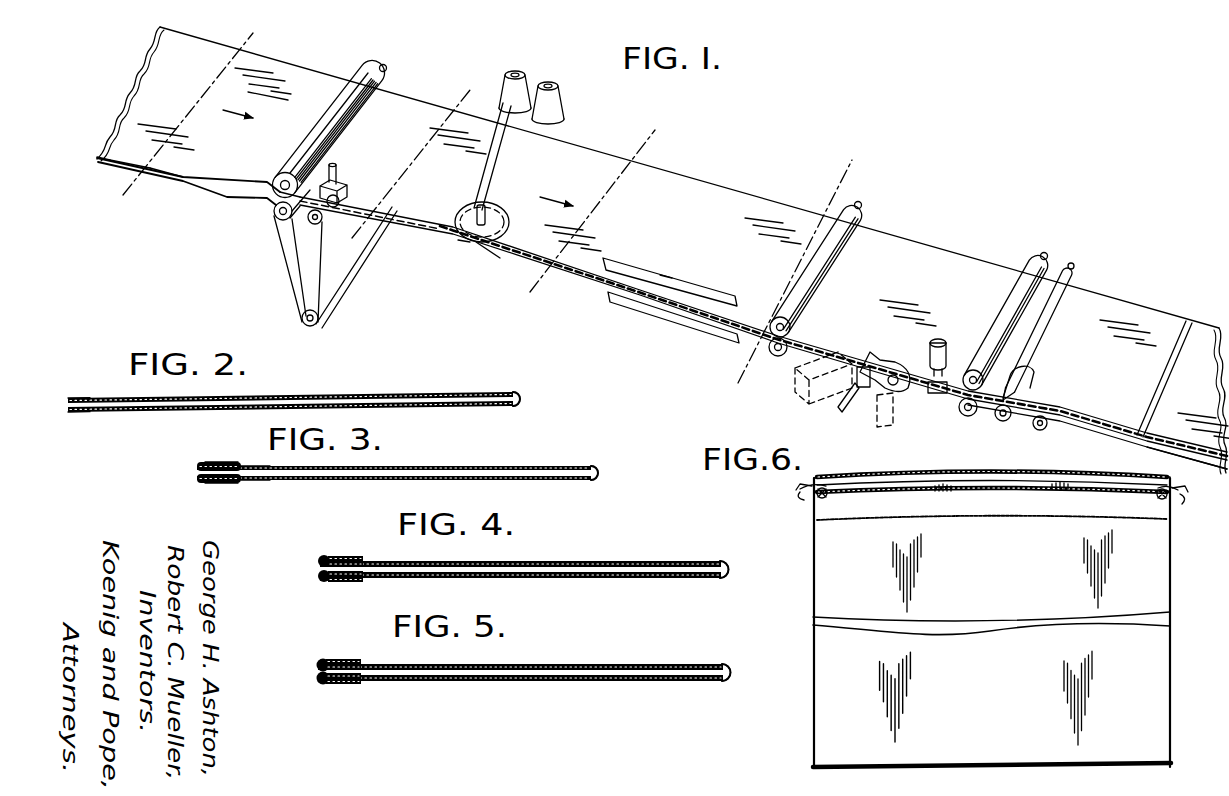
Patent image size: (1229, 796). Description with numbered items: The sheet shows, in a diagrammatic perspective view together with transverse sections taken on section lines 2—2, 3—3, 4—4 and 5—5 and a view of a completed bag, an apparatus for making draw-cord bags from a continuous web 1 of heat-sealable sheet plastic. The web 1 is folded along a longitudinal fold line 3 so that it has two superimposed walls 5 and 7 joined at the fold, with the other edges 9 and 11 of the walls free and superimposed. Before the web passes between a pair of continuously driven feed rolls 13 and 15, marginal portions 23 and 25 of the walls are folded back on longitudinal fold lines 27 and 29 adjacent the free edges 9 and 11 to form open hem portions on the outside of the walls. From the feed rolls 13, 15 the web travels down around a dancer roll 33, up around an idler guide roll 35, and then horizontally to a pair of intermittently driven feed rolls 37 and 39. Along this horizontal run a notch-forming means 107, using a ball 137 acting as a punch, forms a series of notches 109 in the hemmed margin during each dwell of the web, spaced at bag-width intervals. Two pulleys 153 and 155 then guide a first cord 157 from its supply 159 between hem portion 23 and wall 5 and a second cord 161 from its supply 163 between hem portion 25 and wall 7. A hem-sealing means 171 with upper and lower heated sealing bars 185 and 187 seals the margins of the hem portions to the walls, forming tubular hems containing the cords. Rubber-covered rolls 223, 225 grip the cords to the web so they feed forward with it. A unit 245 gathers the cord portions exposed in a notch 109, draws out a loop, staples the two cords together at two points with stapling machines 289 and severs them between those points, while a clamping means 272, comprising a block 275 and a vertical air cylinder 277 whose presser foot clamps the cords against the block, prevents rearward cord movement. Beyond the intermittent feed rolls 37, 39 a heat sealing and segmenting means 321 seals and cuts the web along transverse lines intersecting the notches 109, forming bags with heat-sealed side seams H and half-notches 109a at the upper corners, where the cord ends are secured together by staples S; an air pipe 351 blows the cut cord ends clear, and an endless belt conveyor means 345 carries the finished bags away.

In FIG. 1, the web 1 is at (148, 91).
In FIG. 2, the web 1 is at (122, 392).
In FIG. 3, the web 1 is at (488, 464).
In FIG. 4, the web 1 is at (626, 562).
In FIG. 5, the web 1 is at (634, 664).
In FIG. 1, the section line 2— 2 is at (231, 33).
In FIG. 1, the longitudinal fold line 3 is at (290, 56).
In FIG. 2, the longitudinal fold line 3 is at (521, 400).
In FIG. 3, the longitudinal fold line 3 is at (599, 474).
In FIG. 4, the longitudinal fold line 3 is at (729, 569).
In FIG. 5, the longitudinal fold line 3 is at (731, 673).
In FIG. 6, the longitudinal fold line 3 is at (1022, 760).
In FIG. 1, the section line 4— 4 is at (636, 135).
In FIG. 1, the wall 5 is at (208, 152).
In FIG. 2, the wall 5 is at (258, 396).
In FIG. 3, the wall 5 is at (410, 466).
In FIG. 4, the wall 5 is at (550, 562).
In FIG. 5, the wall 5 is at (562, 668).
In FIG. 6, the wall 5 is at (988, 478).
In FIG. 1, the wall 7 is at (190, 184).
In FIG. 2, the wall 7 is at (228, 412).
In FIG. 3, the wall 7 is at (410, 478).
In FIG. 4, the wall 7 is at (532, 578).
In FIG. 5, the wall 7 is at (552, 681).
In FIG. 6, the wall 7 is at (982, 585).
In FIG. 1, the free edge 9 is at (124, 167).
In FIG. 2, the free edge 9 is at (70, 396).
In FIG. 3, the free edge 9 is at (248, 465).
In FIG. 1, the free edge 11 is at (104, 161).
In FIG. 2, the free edge 11 is at (66, 414).
In FIG. 3, the free edge 11 is at (244, 481).
In FIG. 1, the feed roll 13 is at (273, 213).
In FIG. 1, the feed roll 15 is at (296, 172).
In FIG. 1, the marginal portion (open hem portion) 23 is at (243, 186).
In FIG. 3, the marginal portion (open hem portion) 23 is at (222, 462).
In FIG. 4, the marginal portion (open hem portion) 23 is at (346, 557).
In FIG. 5, the marginal portion (open hem portion) 23 is at (347, 660).
In FIG. 1, the marginal portion (open hem portion) 25 is at (328, 280).
In FIG. 3, the marginal portion (open hem portion) 25 is at (222, 483).
In FIG. 4, the marginal portion (open hem portion) 25 is at (350, 582).
In FIG. 5, the marginal portion (open hem portion) 25 is at (349, 684).
In FIG. 6, the marginal portion (open hem portion) 25 is at (1012, 512).
In FIG. 1, the longitudinal fold line 27 is at (448, 227).
In FIG. 3, the longitudinal fold line 27 is at (197, 467).
In FIG. 4, the longitudinal fold line 27 is at (317, 561).
In FIG. 5, the longitudinal fold line 27 is at (316, 664).
In FIG. 6, the longitudinal fold line 27 is at (950, 470).
In FIG. 1, the longitudinal fold line 29 is at (425, 243).
In FIG. 3, the longitudinal fold line 29 is at (197, 479).
In FIG. 4, the longitudinal fold line 29 is at (317, 577).
In FIG. 5, the longitudinal fold line 29 is at (316, 680).
In FIG. 6, the longitudinal fold line 29 is at (966, 493).
In FIG. 1, the dancer roll 33 is at (301, 318).
In FIG. 1, the idler guide roll 35 is at (322, 223).
In FIG. 1, the intermittent feed roll 37 is at (961, 413).
In FIG. 1, the intermittent feed roll 39 is at (992, 336).
In FIG. 1, the notch-forming means 107 is at (350, 184).
In FIG. 1, the notch 109 is at (476, 255).
In FIG. 6, the half-notch 109a is at (806, 500).
In FIG. 1, the ball 137 is at (340, 201).
In FIG. 1, the pulley 153 is at (503, 216).
In FIG. 1, the pulley 155 is at (470, 246).
In FIG. 1, the first cord 157 is at (480, 192).
In FIG. 4, the first cord 157 is at (328, 556).
In FIG. 5, the first cord 157 is at (328, 659).
In FIG. 6, the first cord 157 is at (818, 482).
In FIG. 1, the cord supply 159 is at (504, 80).
In FIG. 1, the second cord 161 is at (500, 156).
In FIG. 4, the second cord 161 is at (330, 582).
In FIG. 5, the second cord 161 is at (330, 685).
In FIG. 6, the second cord 161 is at (832, 497).
In FIG. 1, the cord supply 163 is at (563, 95).
In FIG. 1, the hem-sealing means 171 is at (664, 274).
In FIG. 1, the upper sealing bar 185 is at (630, 266).
In FIG. 1, the lower sealing bar 187 is at (658, 318).
In FIG. 1, the rubber-covered roll 223 is at (772, 355).
In FIG. 1, the rubber-covered roll 225 is at (816, 290).
In FIG. 1, the unit 245 is at (883, 350).
In FIG. 1, the clamping means 272 is at (949, 338).
In FIG. 1, the block 275 is at (932, 394).
In FIG. 1, the air cylinder 277 is at (930, 349).
In FIG. 1, the stapling machine 289 is at (812, 400).
In FIG. 1, the heat sealing and segmenting means 321 is at (1050, 330).
In FIG. 1, the endless belt conveyor means 345 is at (1092, 444).
In FIG. 1, the air pipe 351 is at (1044, 340).
In FIG. 1, the lines of heat sealing H is at (1166, 372).
In FIG. 6, the lines of heat sealing H is at (815, 595).
In FIG. 6, the staples S is at (794, 487).